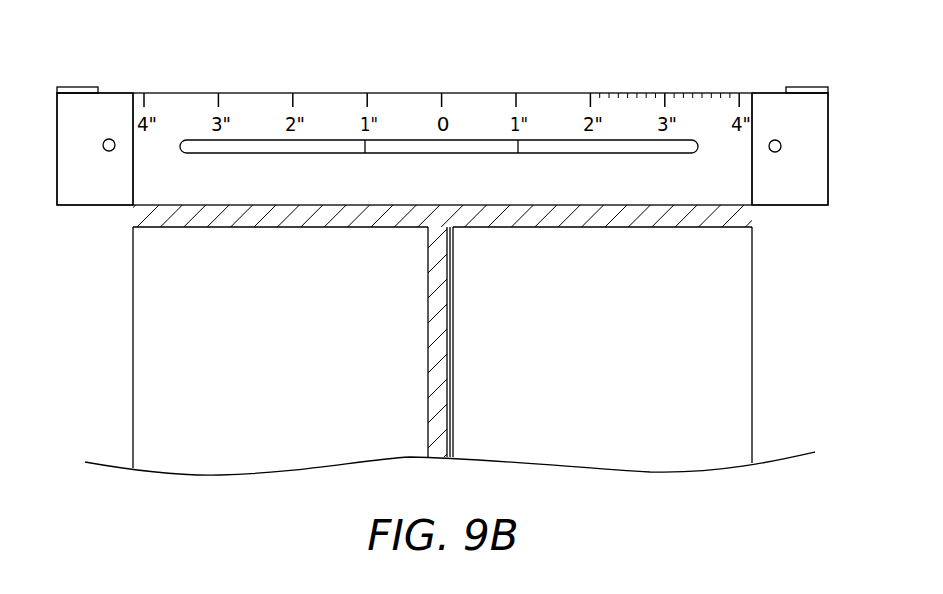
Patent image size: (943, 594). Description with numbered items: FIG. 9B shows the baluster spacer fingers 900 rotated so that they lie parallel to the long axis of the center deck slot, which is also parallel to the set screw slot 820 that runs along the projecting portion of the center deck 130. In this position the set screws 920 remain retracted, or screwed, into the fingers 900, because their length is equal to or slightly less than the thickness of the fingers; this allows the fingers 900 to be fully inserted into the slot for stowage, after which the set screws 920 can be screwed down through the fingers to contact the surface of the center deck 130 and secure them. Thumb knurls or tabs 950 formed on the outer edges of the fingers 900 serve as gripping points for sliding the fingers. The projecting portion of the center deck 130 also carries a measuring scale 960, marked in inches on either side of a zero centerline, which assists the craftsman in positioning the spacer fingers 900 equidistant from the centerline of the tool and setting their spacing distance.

The center deck 130 is at (147, 384).
The set screw slot 820 is at (410, 154).
The baluster spacer fingers 900 is at (97, 206).
The set screws 920 is at (103, 144).
The thumb knurls or tabs 950 is at (78, 87).
The measuring scale 960 is at (626, 93).